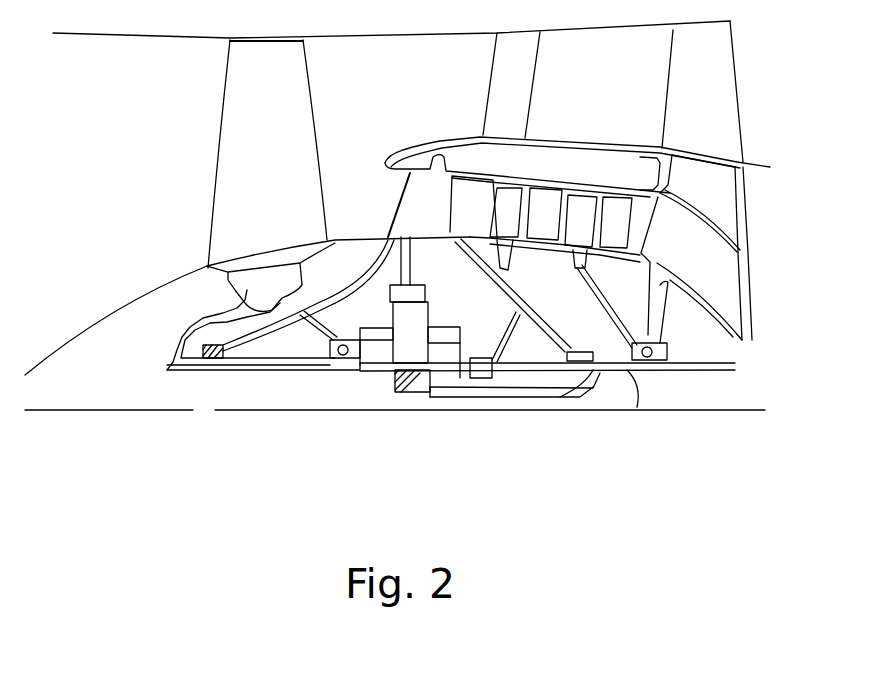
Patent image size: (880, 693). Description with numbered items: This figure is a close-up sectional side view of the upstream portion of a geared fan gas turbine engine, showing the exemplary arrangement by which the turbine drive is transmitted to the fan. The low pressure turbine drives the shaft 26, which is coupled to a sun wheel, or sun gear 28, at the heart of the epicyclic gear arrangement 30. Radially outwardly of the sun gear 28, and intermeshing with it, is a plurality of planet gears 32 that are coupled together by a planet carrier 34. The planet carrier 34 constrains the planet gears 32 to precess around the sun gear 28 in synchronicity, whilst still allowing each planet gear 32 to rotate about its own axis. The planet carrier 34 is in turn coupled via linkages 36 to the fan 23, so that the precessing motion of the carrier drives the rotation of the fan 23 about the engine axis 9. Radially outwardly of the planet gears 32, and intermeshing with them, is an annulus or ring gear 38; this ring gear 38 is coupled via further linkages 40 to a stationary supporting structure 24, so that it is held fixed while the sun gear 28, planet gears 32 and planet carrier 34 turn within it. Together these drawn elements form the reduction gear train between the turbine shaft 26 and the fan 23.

The engine axis 9 is at (178, 411).
The fan 23 is at (233, 192).
The stationary supporting structure 24 is at (418, 203).
The shaft 26 is at (530, 393).
The sun gear 28 is at (405, 392).
The epicyclic gear arrangement 30 is at (372, 358).
The planet gears 32 is at (390, 362).
The planet carrier 34 is at (450, 383).
The linkages 36 is at (347, 373).
The ring gear 38 is at (393, 293).
The linkages 40 is at (432, 262).